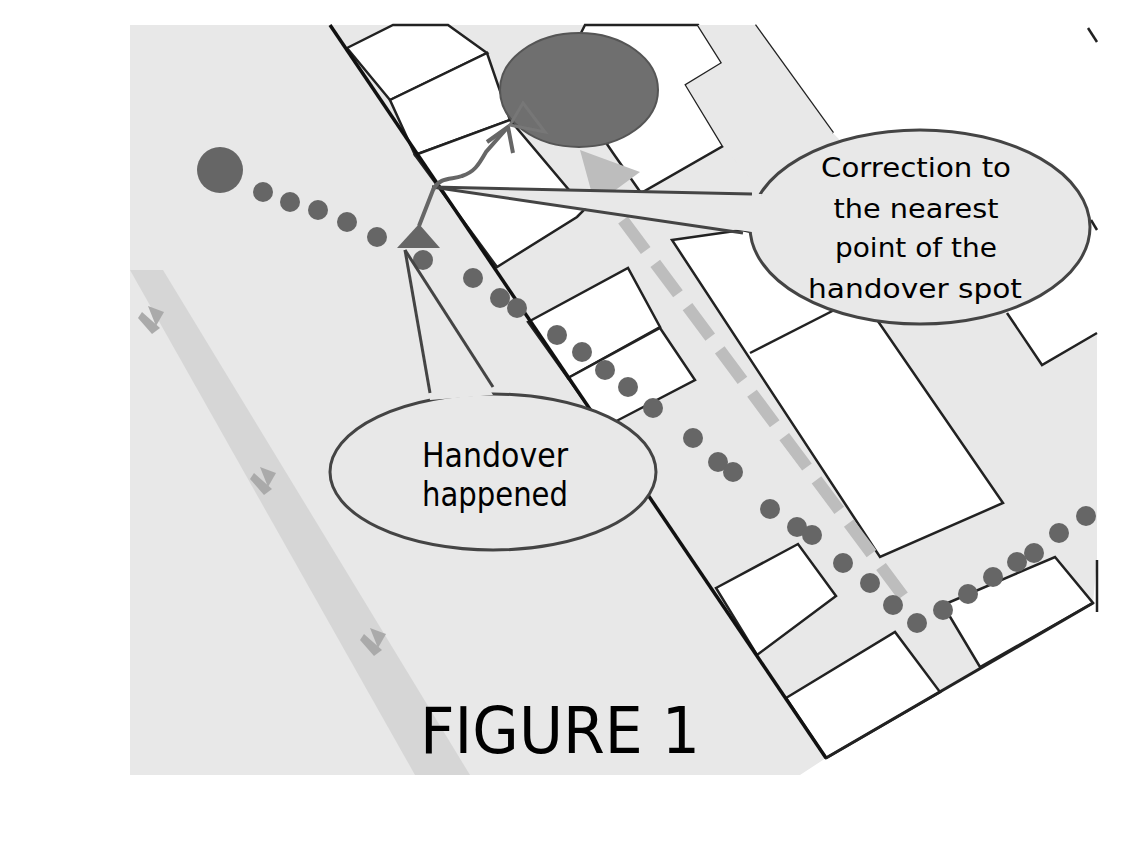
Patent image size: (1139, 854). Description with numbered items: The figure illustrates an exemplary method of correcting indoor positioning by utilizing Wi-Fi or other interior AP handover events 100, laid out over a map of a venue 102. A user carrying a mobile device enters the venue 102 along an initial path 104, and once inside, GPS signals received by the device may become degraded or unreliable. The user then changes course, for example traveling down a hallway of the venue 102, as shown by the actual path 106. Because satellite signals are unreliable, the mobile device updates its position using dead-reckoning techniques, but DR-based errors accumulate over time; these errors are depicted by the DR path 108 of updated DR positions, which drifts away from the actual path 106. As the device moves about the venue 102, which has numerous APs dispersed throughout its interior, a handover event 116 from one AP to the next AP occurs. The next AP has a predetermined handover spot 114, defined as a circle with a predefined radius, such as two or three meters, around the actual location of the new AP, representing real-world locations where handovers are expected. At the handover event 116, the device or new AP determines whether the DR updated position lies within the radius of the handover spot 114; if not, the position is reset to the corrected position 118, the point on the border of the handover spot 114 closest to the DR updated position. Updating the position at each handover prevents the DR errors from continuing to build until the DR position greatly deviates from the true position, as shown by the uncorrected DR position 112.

The method of correcting indoor positioning by utilizing interior AP handover events 100 is at (960, 50).
The venue 102 is at (820, 100).
The initial path 104 is at (1090, 490).
The actual path 106 is at (787, 414).
The DR path 108 is at (697, 497).
The uncorrected DR position 112 is at (240, 140).
The handover spot 114 is at (652, 55).
The handover event 116 is at (378, 260).
The corrected position 118 is at (515, 121).